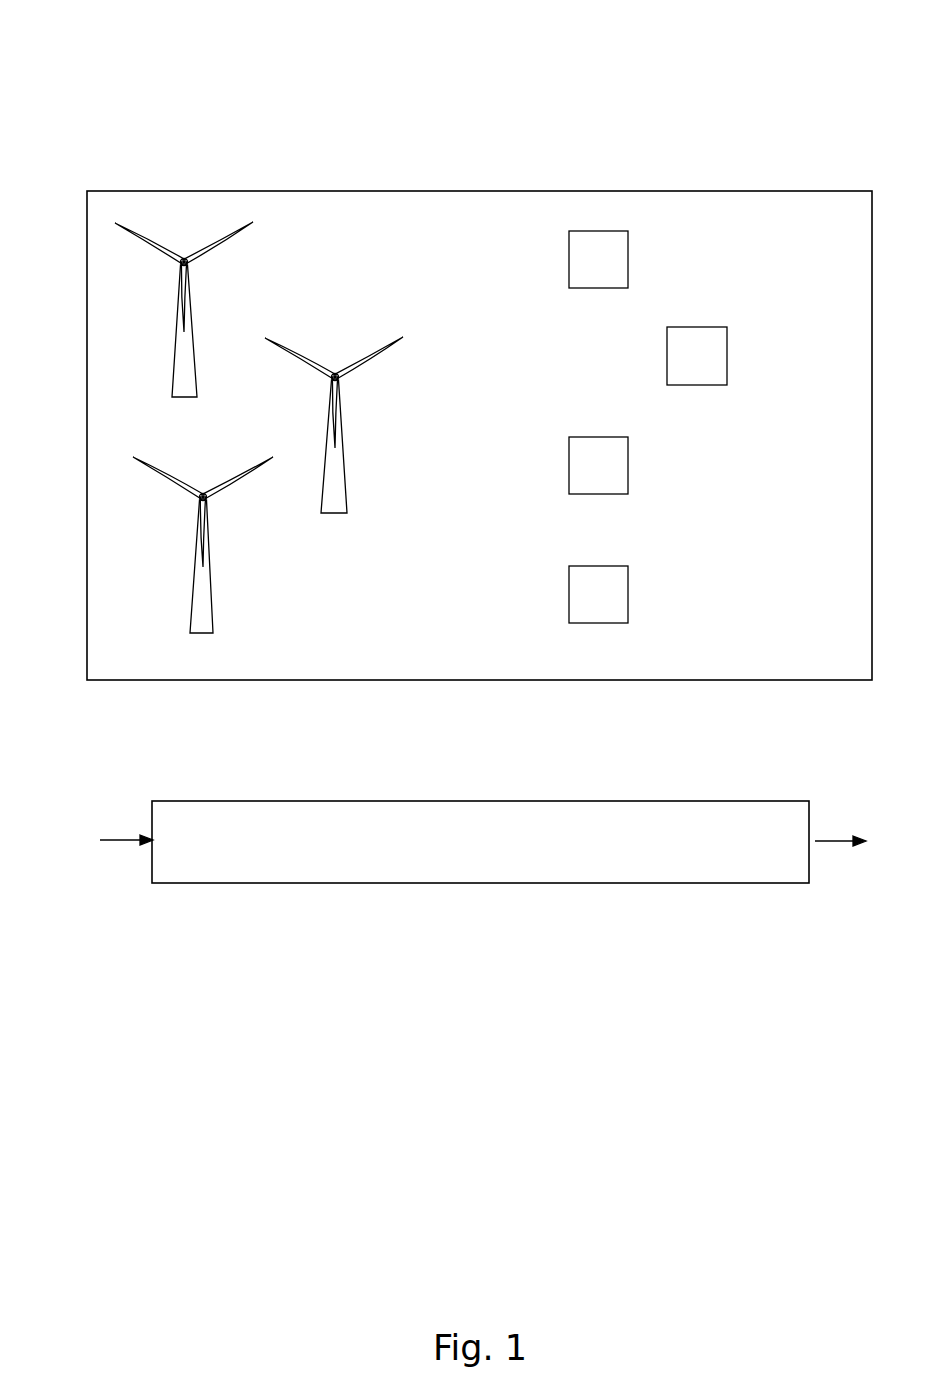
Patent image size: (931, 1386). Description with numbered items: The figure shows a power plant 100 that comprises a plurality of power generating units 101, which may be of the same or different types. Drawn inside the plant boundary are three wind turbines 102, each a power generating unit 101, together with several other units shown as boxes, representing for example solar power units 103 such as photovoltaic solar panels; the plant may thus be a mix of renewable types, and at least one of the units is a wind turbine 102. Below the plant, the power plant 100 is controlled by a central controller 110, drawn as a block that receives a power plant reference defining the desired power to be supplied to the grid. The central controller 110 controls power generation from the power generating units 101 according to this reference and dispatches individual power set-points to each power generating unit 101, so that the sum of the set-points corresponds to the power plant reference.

The power plant 100 is at (166, 65).
The power generating unit 101 is at (205, 292).
The wind turbine 102 is at (347, 439).
The solar power unit 103 is at (734, 355).
The central controller 110 is at (272, 897).